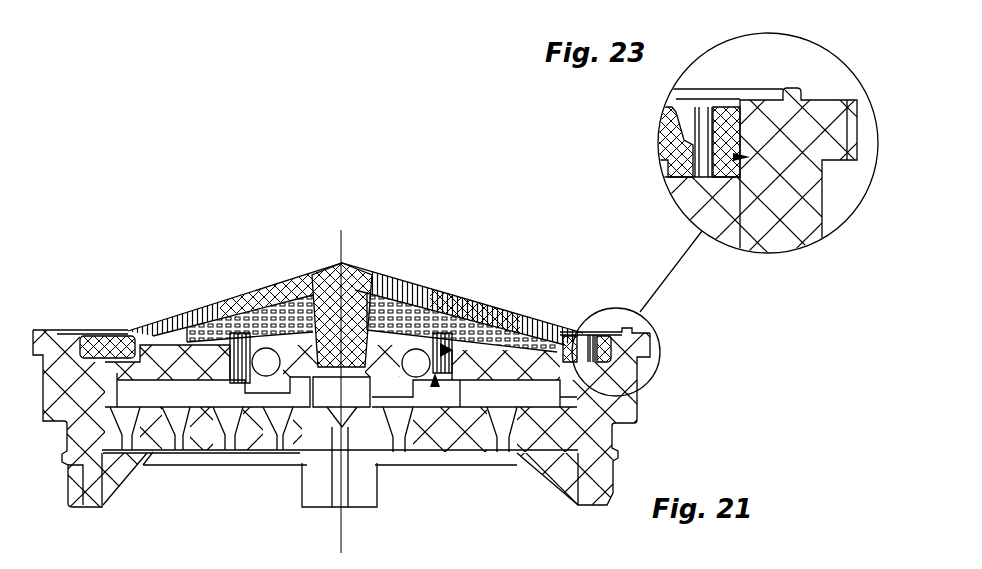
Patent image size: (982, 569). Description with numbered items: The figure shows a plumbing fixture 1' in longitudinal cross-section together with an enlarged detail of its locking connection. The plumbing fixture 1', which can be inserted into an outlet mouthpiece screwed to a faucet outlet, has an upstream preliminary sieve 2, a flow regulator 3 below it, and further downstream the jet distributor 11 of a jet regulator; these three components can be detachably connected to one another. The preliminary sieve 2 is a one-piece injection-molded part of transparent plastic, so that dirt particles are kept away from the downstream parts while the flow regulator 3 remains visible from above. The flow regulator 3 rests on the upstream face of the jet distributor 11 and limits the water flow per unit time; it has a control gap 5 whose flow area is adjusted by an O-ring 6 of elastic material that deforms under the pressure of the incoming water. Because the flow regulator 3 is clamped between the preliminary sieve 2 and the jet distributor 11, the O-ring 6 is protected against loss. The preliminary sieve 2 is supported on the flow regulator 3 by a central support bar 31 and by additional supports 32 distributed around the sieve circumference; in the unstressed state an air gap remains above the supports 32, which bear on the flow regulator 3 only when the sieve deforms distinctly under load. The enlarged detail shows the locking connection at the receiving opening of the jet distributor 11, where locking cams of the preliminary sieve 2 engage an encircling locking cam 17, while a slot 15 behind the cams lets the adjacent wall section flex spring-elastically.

In FIG. 21, the plumbing fixture 1' is at (454, 176).
In FIG. 21, the preliminary sieve 2 is at (325, 300).
In FIG. 23, the preliminary sieve 2 is at (738, 150).
In FIG. 21, the flow regulator 3 is at (455, 338).
In FIG. 21, the control gap 5 is at (462, 365).
In FIG. 21, the O-ring 6 is at (398, 387).
In FIG. 21, the jet distributor 11 is at (560, 340).
In FIG. 23, the jet distributor 11 is at (787, 240).
In FIG. 23, the slot 15 is at (700, 180).
In FIG. 23, the encircling locking cam 17 is at (732, 180).
In FIG. 21, the central support bar 31 is at (333, 387).
In FIG. 21, the supports 32 is at (168, 342).